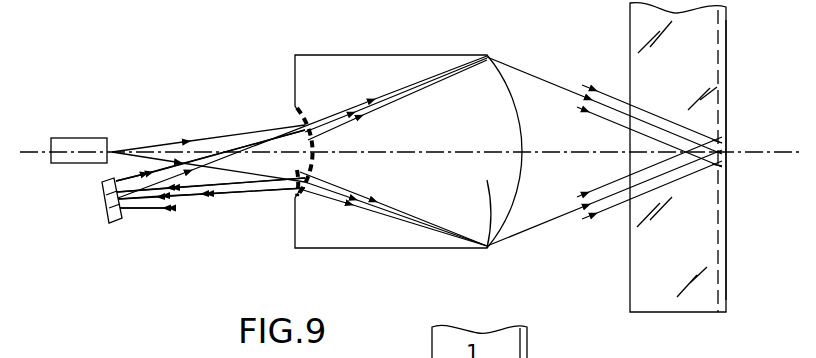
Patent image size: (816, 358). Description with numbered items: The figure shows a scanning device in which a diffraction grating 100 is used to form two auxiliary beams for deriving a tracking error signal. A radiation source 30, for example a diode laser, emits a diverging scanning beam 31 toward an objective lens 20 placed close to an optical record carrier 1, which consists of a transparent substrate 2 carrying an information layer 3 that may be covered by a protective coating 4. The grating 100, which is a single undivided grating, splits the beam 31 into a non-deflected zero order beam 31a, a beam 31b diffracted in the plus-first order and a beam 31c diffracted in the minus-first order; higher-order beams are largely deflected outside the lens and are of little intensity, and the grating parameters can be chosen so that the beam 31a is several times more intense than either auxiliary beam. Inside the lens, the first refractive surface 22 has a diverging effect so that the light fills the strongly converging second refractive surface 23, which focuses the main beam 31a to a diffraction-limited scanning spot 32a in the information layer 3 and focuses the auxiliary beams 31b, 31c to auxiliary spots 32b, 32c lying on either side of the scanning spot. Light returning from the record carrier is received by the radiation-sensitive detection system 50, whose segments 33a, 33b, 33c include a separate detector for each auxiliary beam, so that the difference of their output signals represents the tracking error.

The optical record carrier 1 is at (612, 31).
The transparent substrate 2 is at (651, 296).
The information layer 3 is at (716, 297).
The protective coating 4 is at (722, 305).
The objective lens 20 is at (398, 33).
The first refractive surface 22 is at (305, 191).
The second refractive surface 23 is at (505, 226).
The radiation source 30 is at (80, 138).
The scanning beam 31 is at (172, 142).
The zero order beam 31a is at (422, 82).
The +1 order beam 31b is at (318, 262).
The −1 order beam 31c is at (348, 262).
The scanning spot 32a is at (720, 149).
The auxiliary spot 32b is at (720, 137).
The auxiliary spot 32c is at (722, 162).
The detector segment a 33a is at (106, 205).
The detector segment b 33b is at (101, 188).
The detector segment c 33c is at (108, 221).
The radiation-sensitive detection system 50 is at (119, 218).
The diffraction grating 100 is at (300, 158).